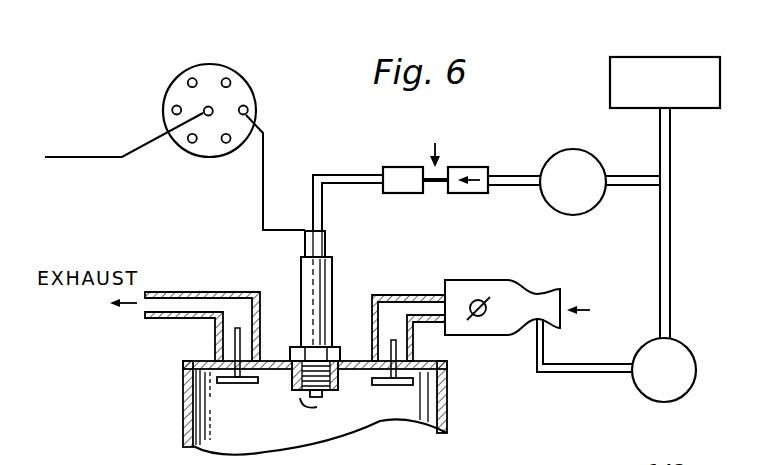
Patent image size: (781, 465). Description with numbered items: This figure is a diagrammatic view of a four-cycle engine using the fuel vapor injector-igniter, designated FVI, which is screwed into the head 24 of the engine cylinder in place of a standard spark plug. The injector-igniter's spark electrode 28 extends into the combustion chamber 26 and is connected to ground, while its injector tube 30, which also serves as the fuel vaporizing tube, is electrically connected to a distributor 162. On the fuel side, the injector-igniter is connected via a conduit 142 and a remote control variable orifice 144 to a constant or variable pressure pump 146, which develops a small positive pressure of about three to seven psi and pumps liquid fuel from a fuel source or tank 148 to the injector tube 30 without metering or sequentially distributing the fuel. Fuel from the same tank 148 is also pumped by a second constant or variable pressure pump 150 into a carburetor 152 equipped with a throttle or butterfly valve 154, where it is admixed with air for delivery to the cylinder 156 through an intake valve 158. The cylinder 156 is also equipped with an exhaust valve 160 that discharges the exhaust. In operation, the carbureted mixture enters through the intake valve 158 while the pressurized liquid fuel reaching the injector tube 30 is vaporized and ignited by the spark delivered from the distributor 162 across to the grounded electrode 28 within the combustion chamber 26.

The head 24 is at (353, 358).
The combustion chamber 26 is at (238, 431).
The spark electrode 28 is at (312, 413).
The injector tube 30 is at (313, 297).
The conduit 142 is at (342, 175).
The remote control variable orifice 144 is at (463, 166).
The pressure pump 146 is at (583, 126).
The fuel tank 148 is at (722, 84).
The pressure pump 150 is at (688, 353).
The carburetor 152 is at (493, 335).
The throttle valve 154 is at (462, 316).
The cylinder 156 is at (447, 427).
The intake valve 158 is at (398, 387).
The exhaust valve 160 is at (212, 378).
The distributor 162 is at (185, 152).